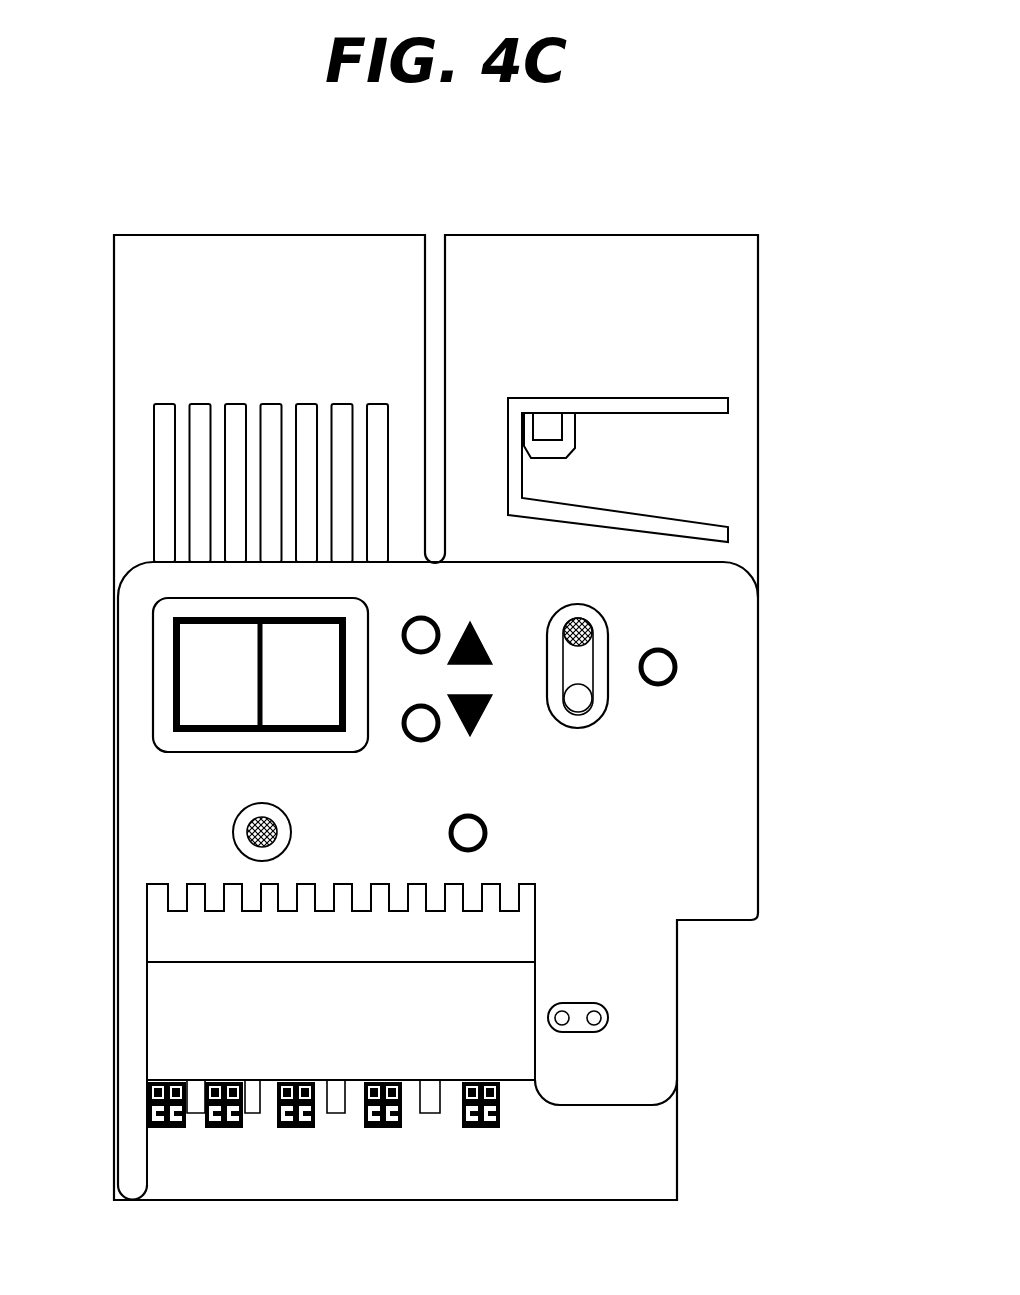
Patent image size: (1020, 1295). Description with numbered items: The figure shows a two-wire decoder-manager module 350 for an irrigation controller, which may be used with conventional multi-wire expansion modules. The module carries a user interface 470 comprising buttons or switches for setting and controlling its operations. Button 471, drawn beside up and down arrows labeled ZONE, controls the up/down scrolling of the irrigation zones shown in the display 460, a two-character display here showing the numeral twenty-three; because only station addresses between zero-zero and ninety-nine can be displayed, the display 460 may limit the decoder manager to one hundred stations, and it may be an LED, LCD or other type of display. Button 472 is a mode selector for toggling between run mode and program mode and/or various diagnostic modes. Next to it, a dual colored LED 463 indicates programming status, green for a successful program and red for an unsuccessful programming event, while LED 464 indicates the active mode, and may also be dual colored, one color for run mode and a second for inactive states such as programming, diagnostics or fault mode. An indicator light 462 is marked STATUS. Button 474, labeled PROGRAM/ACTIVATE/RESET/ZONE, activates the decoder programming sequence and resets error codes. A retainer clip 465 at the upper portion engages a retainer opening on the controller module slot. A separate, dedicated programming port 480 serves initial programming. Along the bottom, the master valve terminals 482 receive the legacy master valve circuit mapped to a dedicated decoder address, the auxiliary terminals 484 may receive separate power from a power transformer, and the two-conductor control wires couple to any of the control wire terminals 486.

The decoder manager module 350 is at (668, 203).
The display 460 is at (176, 680).
The indicator light 462 is at (254, 817).
The dual color LED 463 is at (584, 622).
The LED 464 is at (586, 712).
The retainer clip 465 is at (628, 398).
The user interface 470 is at (730, 620).
The button 471 is at (432, 617).
The button 472 is at (678, 666).
The button 474 is at (487, 833).
The programming port 480 is at (588, 1003).
The master valve terminals 482 is at (175, 1132).
The auxiliary terminals 484 is at (225, 1132).
The control wire terminals 486 is at (290, 1132).